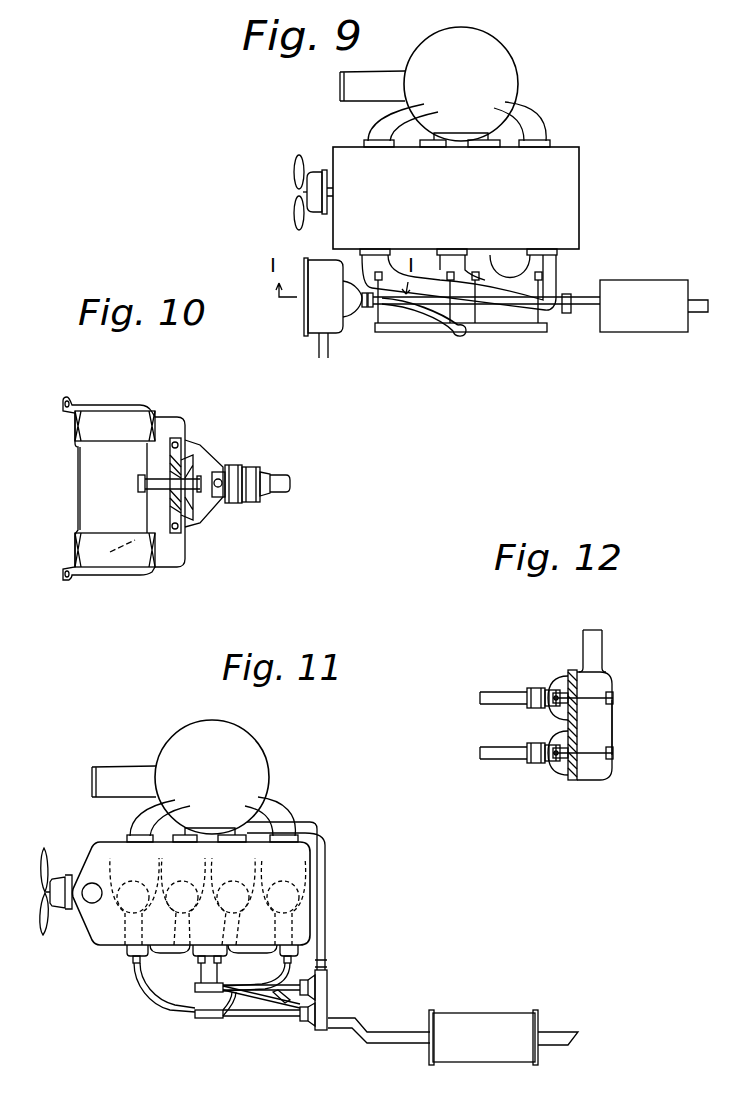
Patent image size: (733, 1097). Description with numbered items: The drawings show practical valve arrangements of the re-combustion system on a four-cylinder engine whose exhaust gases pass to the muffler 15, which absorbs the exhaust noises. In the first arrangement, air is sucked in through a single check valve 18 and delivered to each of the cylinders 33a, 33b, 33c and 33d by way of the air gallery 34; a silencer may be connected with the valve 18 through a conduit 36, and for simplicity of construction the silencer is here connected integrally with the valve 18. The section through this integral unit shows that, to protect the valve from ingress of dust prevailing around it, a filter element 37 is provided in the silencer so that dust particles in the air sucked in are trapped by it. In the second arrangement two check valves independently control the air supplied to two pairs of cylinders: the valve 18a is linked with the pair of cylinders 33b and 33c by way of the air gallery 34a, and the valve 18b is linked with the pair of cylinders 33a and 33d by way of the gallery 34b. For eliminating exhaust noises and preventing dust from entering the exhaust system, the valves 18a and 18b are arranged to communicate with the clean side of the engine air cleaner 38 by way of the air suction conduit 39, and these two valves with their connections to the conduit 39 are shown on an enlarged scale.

In FIG. 9, the muffler 15 is at (643, 334).
In FIG. 11, the muffler 15 is at (500, 1022).
In FIG. 9, the valve 18 is at (357, 318).
In FIG. 10, the valve 18 is at (217, 449).
In FIG. 12, the valve 18a is at (553, 677).
In FIG. 11, the valve 18a is at (278, 1012).
In FIG. 12, the valve 18b is at (555, 765).
In FIG. 11, the valve 18b is at (303, 1027).
In FIG. 11, the cylinder 33a is at (116, 862).
In FIG. 11, the cylinder 33b is at (183, 898).
In FIG. 11, the cylinder 33c is at (234, 898).
In FIG. 11, the cylinder 33d is at (283, 898).
In FIG. 9, the air gallery 34 is at (338, 336).
In FIG. 10, the air gallery 34 is at (77, 472).
In FIG. 11, the air gallery 34a is at (195, 989).
In FIG. 11, the gallery 34b is at (214, 1018).
In FIG. 9, the conduit 36 is at (436, 315).
In FIG. 10, the filter element 37 is at (138, 412).
In FIG. 11, the engine air cleaner 38 is at (247, 768).
In FIG. 12, the air suction conduit 39 is at (593, 643).
In FIG. 11, the air suction conduit 39 is at (327, 860).